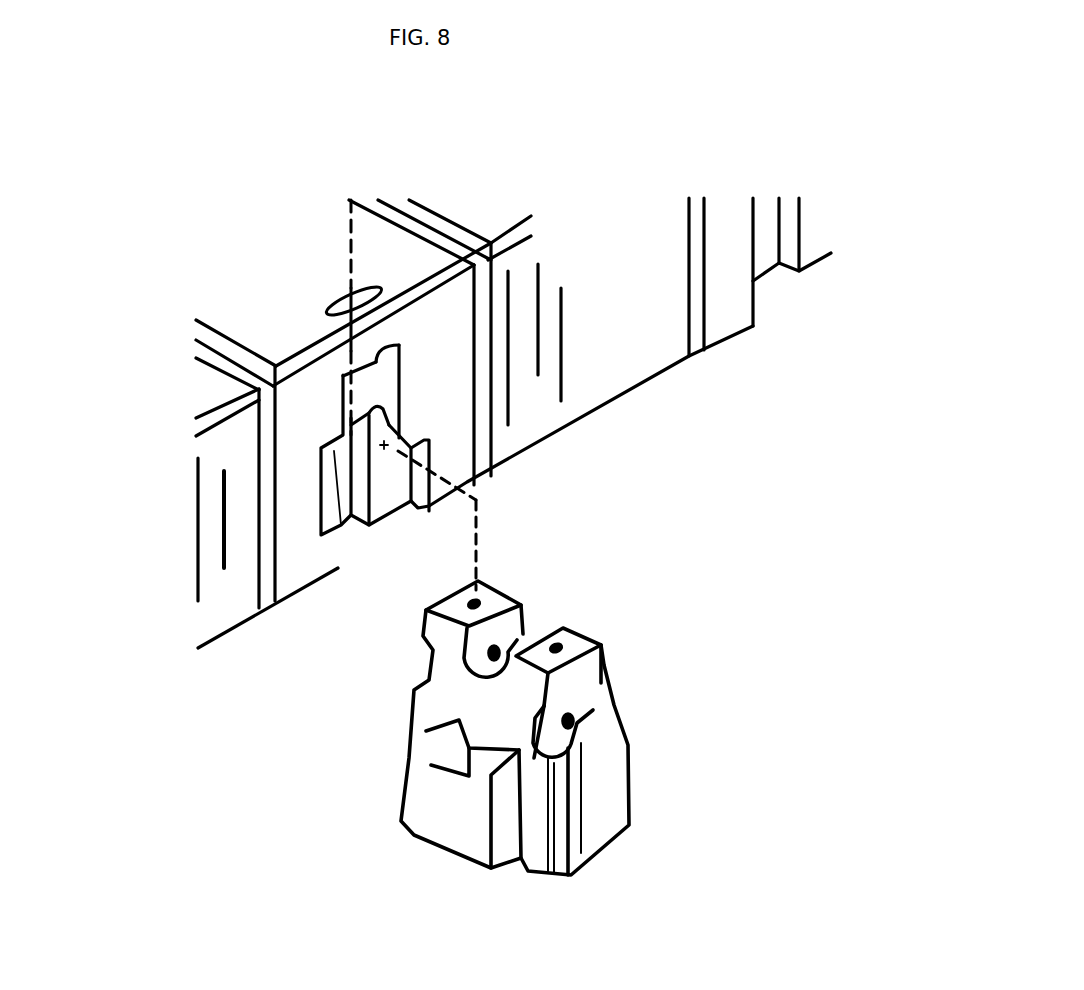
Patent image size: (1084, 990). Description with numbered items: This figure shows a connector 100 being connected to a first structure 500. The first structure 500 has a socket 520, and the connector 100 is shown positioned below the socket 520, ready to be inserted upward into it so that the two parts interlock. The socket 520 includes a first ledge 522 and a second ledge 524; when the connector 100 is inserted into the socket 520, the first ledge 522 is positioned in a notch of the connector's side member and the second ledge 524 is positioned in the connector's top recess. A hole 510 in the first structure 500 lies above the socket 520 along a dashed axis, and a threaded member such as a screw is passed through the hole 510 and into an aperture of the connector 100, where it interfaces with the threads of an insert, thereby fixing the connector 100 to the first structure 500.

The first structure 500 is at (807, 173).
The hole 510 is at (347, 303).
The socket 520 is at (377, 552).
The first ledge 522 is at (341, 527).
The second ledge 524 is at (370, 366).
The connector 100 is at (608, 625).